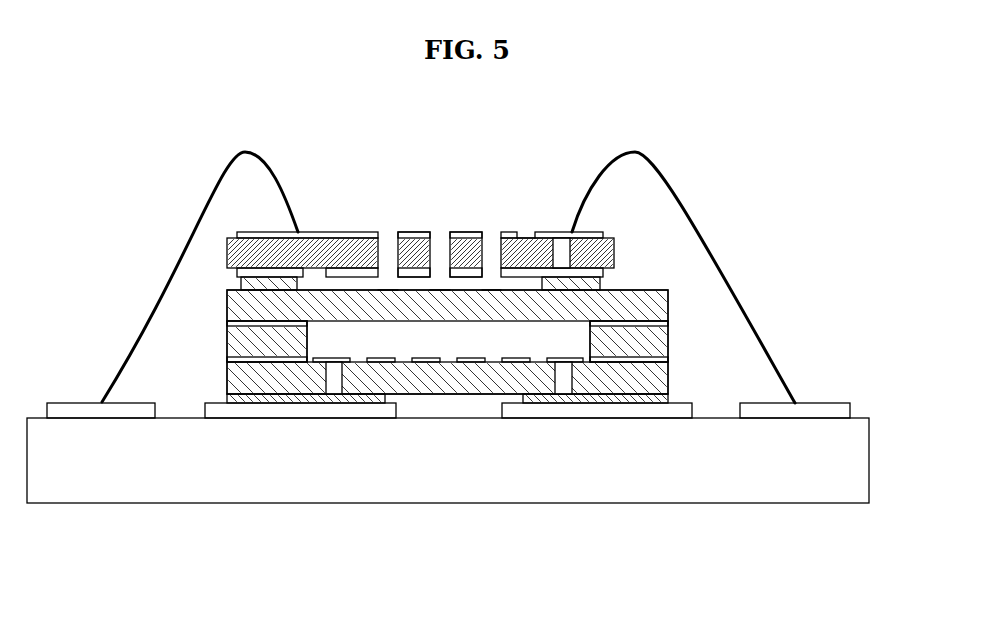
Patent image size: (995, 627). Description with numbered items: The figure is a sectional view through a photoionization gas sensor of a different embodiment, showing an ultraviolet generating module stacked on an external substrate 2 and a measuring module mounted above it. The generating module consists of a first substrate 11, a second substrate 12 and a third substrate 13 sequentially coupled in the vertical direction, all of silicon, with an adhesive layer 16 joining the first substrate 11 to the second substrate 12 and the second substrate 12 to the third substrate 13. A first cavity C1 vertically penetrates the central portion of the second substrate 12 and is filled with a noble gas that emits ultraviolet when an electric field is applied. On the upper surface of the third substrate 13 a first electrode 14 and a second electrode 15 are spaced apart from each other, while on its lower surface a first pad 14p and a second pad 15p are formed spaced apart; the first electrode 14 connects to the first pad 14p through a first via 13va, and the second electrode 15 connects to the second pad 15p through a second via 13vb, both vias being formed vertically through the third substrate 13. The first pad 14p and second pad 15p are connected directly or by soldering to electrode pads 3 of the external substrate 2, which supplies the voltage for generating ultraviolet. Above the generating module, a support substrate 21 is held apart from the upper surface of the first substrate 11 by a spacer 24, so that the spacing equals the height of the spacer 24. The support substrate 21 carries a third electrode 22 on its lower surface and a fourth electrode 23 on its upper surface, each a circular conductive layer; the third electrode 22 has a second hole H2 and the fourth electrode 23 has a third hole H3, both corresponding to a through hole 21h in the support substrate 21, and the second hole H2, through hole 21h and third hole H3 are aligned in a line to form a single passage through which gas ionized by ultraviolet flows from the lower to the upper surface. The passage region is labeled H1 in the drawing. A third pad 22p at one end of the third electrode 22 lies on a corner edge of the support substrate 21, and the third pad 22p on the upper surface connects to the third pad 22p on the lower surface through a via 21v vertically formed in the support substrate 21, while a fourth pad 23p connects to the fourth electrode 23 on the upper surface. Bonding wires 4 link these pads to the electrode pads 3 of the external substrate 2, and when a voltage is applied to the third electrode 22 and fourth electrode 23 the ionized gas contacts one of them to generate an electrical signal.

The external substrate 2 is at (513, 470).
The electrode pad 3 is at (82, 410).
The bonding wire 4 is at (241, 150).
The first substrate 11 is at (242, 298).
The second substrate 12 is at (250, 335).
The third substrate 13 is at (236, 373).
The first electrode 14 is at (332, 358).
The first pad 14p is at (227, 398).
The second electrode 15 is at (381, 358).
The second pad 15p is at (658, 403).
The adhesive layer 16 is at (228, 357).
The support substrate 21 is at (613, 246).
The through hole 21h is at (492, 251).
The via 21v is at (560, 237).
The third electrode 22 is at (397, 277).
The third pad 22p is at (560, 231).
The fourth electrode 23 is at (418, 237).
The fourth pad 23p is at (301, 231).
The spacer 24 is at (240, 283).
The first via 13va is at (347, 387).
The second via 13vb is at (572, 372).
The first cavity C1 is at (450, 346).
The first gap H1 is at (445, 282).
The second hole H2 is at (389, 269).
The third hole H3 is at (495, 233).